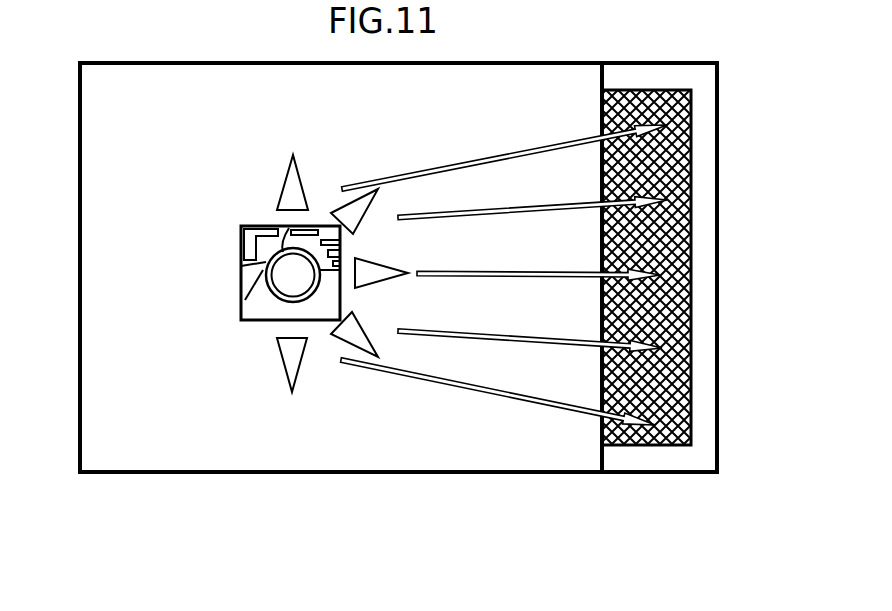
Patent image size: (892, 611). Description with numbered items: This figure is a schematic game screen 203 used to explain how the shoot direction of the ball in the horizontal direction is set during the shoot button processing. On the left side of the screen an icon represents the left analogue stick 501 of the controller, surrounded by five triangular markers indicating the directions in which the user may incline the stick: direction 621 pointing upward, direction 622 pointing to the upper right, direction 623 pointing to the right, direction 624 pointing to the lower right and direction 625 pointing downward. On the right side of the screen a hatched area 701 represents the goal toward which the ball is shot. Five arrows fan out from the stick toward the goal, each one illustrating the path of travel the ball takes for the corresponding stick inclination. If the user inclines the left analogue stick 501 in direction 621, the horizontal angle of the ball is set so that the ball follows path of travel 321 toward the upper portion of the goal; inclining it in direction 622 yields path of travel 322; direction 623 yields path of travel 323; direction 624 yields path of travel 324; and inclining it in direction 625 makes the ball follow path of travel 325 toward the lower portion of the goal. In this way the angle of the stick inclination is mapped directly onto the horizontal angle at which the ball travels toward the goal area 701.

The schematic game screen 203 is at (678, 472).
The selection area (hatched region) 701 is at (692, 337).
The left analogue stick 501 is at (271, 297).
The direction 621 is at (281, 183).
The direction 622 is at (377, 211).
The direction 623 is at (380, 263).
The direction 624 is at (368, 328).
The direction 625 is at (298, 368).
The path of travel 321 is at (499, 153).
The path of travel 322 is at (500, 208).
The path of travel 323 is at (499, 270).
The path of travel 324 is at (499, 330).
The path of travel 325 is at (499, 389).